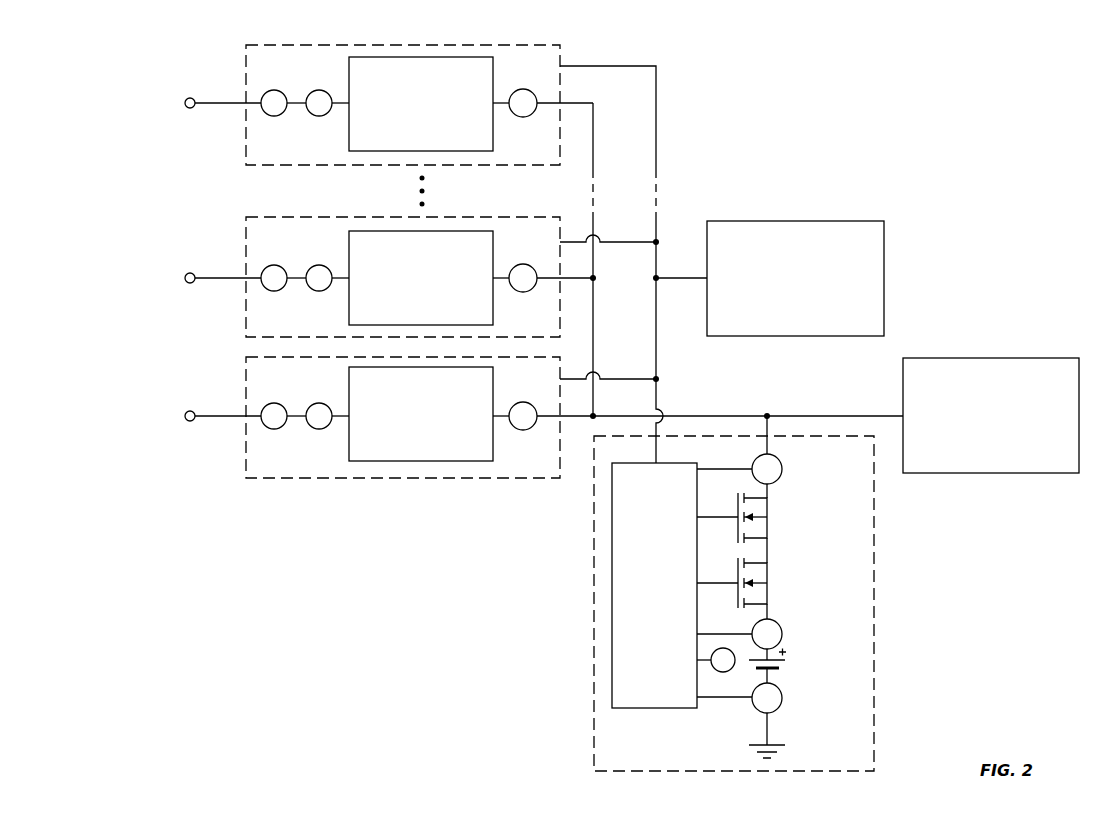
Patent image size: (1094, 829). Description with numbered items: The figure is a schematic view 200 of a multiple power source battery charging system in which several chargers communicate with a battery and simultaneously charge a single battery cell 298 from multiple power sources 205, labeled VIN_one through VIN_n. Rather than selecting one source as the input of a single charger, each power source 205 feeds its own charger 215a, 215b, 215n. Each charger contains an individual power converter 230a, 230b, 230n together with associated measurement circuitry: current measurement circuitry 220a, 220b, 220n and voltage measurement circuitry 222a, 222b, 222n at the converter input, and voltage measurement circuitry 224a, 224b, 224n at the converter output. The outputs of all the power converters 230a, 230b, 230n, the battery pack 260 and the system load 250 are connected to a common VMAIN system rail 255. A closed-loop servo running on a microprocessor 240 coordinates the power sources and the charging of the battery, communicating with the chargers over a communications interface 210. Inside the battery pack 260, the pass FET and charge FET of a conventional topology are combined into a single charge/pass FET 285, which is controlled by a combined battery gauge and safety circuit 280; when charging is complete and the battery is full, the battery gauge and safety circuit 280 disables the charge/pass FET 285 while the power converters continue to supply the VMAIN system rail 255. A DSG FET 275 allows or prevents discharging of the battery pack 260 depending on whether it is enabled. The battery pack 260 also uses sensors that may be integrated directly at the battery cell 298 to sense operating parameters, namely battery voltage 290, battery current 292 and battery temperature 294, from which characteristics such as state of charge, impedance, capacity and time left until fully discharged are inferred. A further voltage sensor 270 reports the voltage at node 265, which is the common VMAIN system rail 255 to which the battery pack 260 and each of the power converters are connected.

The schematic view 200 is at (149, 54).
The power source 205 is at (118, 410).
The communications interface 210 is at (677, 125).
The charger 215n is at (245, 135).
The charger 215b is at (245, 310).
The charger 215a is at (245, 450).
The current measurement circuitry 220n is at (270, 116).
The voltage measurement circuitry 222n is at (316, 116).
The voltage measurement circuitry 224n is at (519, 117).
The power converter 230n is at (438, 138).
The current measurement circuitry 220b is at (270, 291).
The voltage measurement circuitry 222b is at (316, 291).
The voltage measurement circuitry 224b is at (519, 292).
The power converter 230b is at (438, 312).
The current measurement circuitry 220a is at (270, 429).
The voltage measurement circuitry 222a is at (316, 429).
The voltage measurement circuitry 224a is at (519, 430).
The power converter 230a is at (438, 448).
The microprocessor 240 is at (782, 301).
The system load 250 is at (977, 439).
The VMAIN system rail 255 is at (841, 391).
The battery pack 260 is at (593, 732).
The node 265 is at (767, 414).
The voltage sensor 270 is at (782, 469).
The DSG FET 275 is at (779, 519).
The battery gauge and safety circuit 280 is at (641, 636).
The charge/pass FET 285 is at (775, 580).
The battery voltage sensor 290 is at (782, 636).
The battery current sensor 292 is at (782, 700).
The battery temperature sensor 294 is at (718, 672).
The battery cell 298 is at (780, 668).